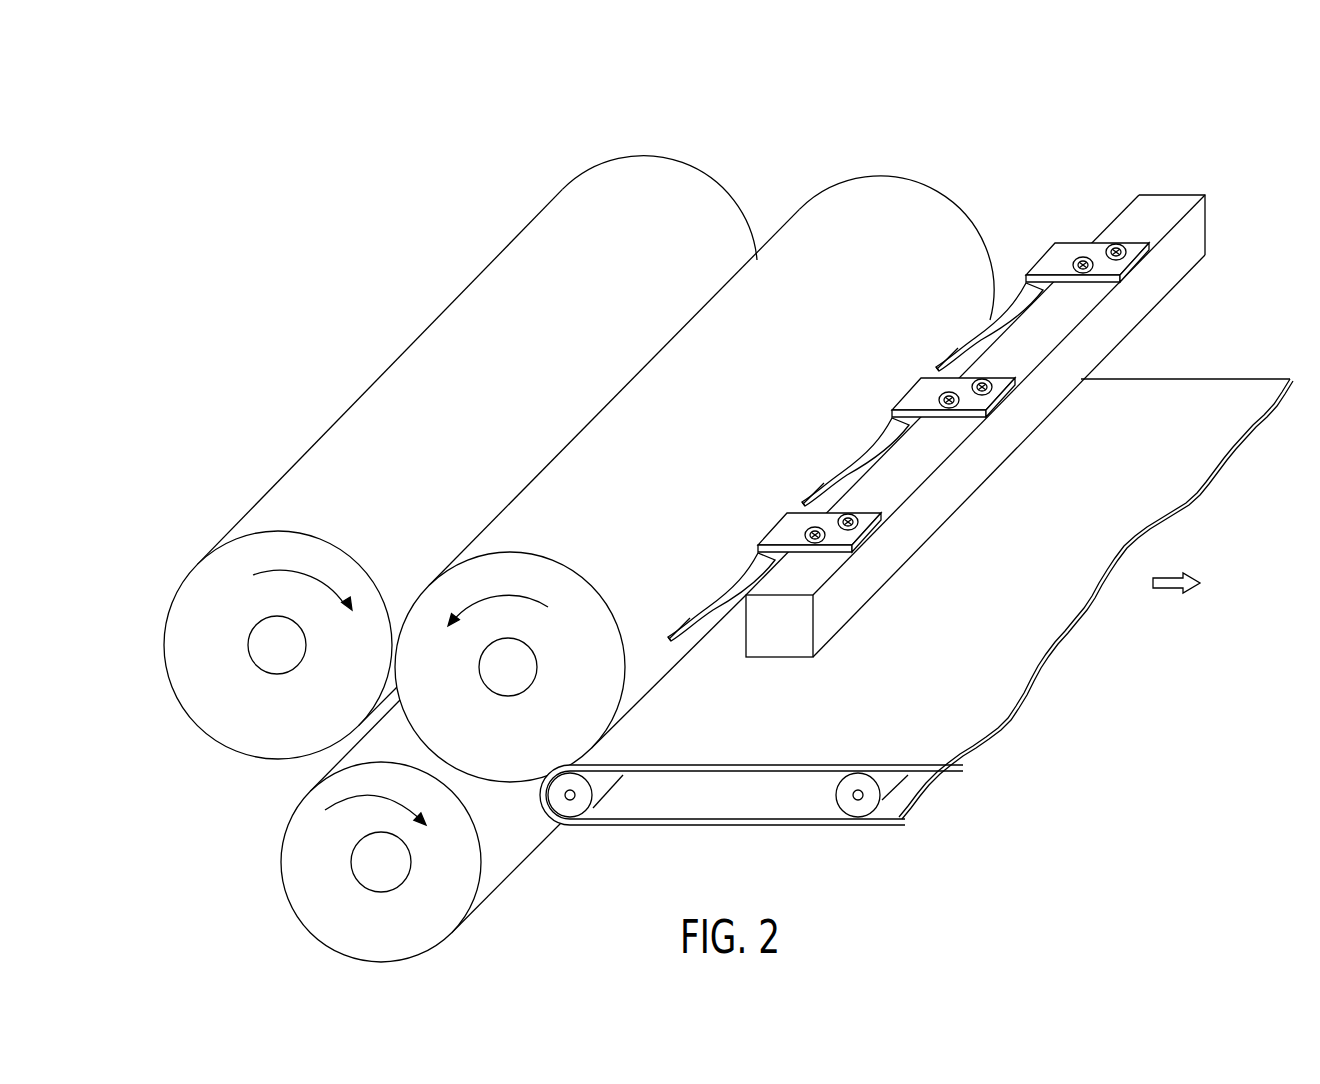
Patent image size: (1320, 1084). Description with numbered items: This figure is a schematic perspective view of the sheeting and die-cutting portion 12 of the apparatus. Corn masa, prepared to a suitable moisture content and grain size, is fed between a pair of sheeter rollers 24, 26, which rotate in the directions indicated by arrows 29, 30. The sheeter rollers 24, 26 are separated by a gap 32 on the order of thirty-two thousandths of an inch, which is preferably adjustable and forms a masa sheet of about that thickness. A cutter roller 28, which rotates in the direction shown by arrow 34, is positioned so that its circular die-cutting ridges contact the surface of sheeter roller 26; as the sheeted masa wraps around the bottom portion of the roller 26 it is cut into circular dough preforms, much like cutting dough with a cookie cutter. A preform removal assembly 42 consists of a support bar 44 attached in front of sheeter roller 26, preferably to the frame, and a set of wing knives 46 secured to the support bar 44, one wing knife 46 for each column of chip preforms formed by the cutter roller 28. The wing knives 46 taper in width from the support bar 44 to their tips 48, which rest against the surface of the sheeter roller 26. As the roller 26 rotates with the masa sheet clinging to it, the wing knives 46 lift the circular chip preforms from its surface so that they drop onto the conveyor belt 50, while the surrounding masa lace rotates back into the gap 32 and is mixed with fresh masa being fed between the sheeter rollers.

The sheeting and die-cutting portion 12 is at (1036, 168).
The sheeter roller 24 is at (427, 375).
The sheeter roller 26 is at (848, 227).
The cutter roller 28 is at (506, 843).
The arrow 29 is at (272, 576).
The arrow 30 is at (515, 594).
The gap 32 is at (383, 678).
The arrow 34 is at (350, 806).
The preform removal assembly 42 is at (1170, 178).
The support bar 44 is at (853, 588).
The wing knife 46 is at (703, 605).
The tip 48 is at (673, 625).
The conveyor belt 50 is at (1186, 410).